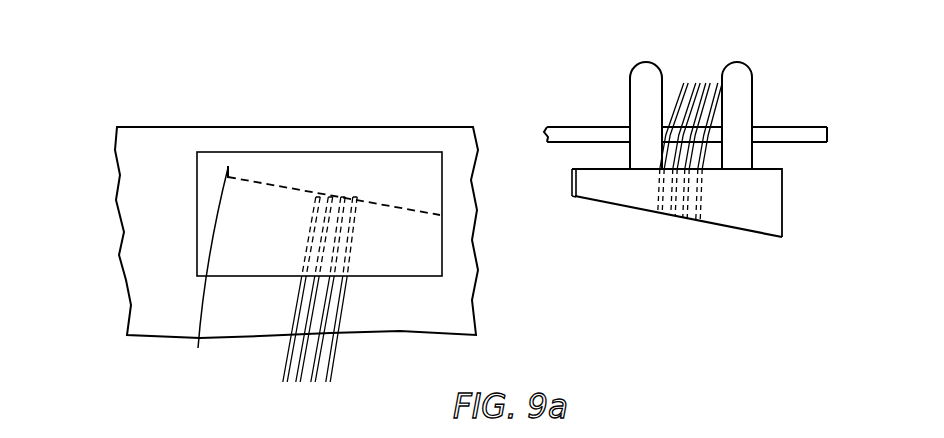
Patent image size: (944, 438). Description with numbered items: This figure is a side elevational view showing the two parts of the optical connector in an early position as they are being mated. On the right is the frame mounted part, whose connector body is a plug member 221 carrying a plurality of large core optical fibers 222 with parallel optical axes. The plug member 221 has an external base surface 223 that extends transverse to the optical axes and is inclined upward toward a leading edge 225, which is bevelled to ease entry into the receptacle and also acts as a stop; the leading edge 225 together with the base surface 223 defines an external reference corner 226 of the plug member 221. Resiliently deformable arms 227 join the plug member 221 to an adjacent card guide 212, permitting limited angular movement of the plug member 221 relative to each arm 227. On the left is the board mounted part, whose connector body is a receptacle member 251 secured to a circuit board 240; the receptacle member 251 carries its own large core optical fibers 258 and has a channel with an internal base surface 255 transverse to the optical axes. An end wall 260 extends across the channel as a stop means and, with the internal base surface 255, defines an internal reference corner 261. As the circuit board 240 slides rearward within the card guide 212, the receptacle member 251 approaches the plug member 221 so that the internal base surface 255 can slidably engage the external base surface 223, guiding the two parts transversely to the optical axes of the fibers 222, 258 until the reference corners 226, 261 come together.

The circuit board 240 is at (163, 137).
The receptacle member 251 is at (212, 168).
The end wall 260 is at (228, 168).
The internal base surface 255 is at (282, 188).
The internal reference corner 261 is at (202, 271).
The large core optical fibers 222 is at (286, 361).
The resiliently deformable arms 227 is at (640, 77).
The card guide 212 is at (777, 134).
The large core optical fibers 258 is at (685, 81).
The plug member 221 is at (768, 205).
The external base surface 223 is at (642, 200).
The leading edge 225 is at (568, 181).
The external reference corner 226 is at (573, 199).